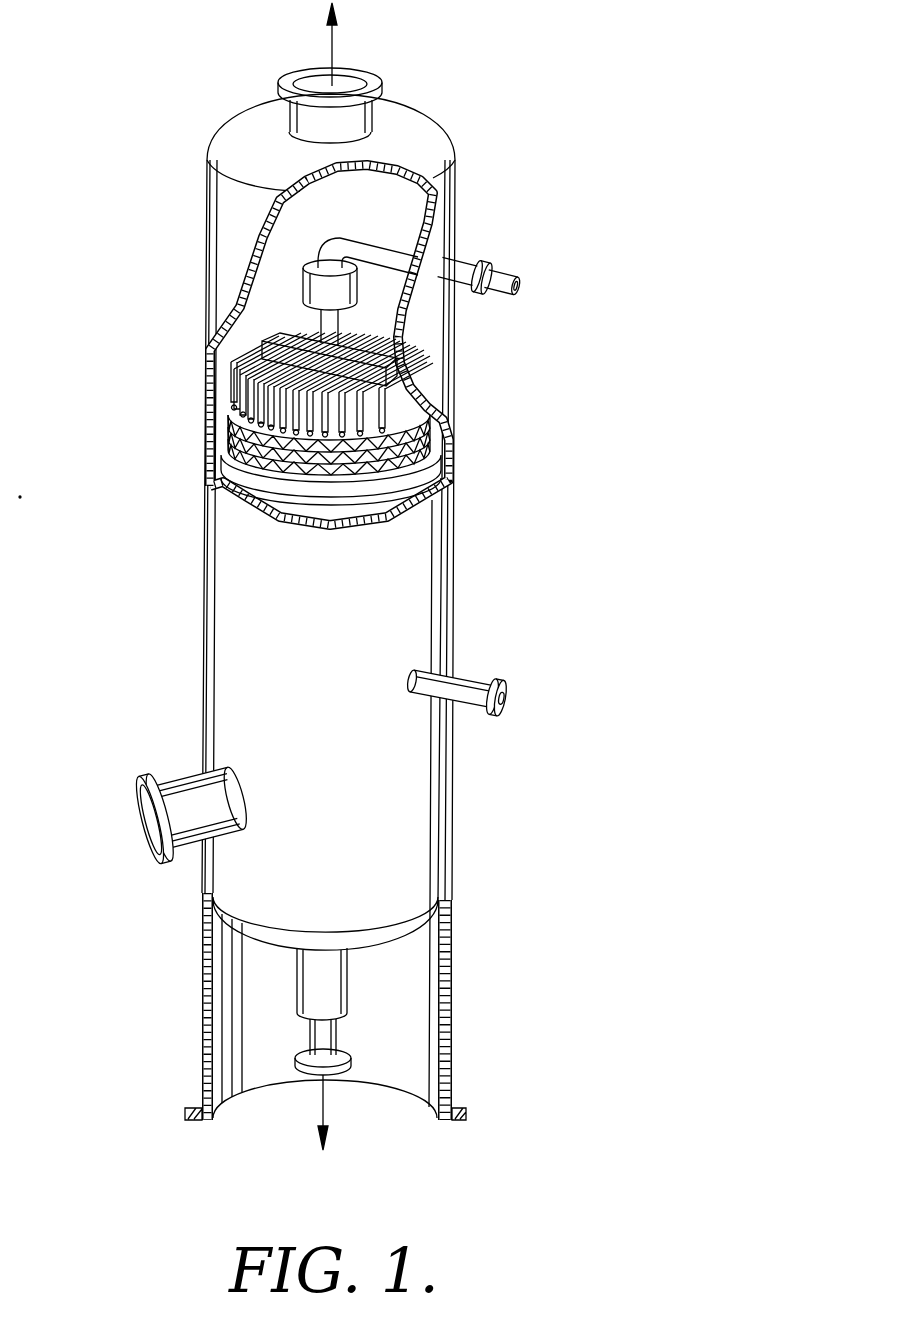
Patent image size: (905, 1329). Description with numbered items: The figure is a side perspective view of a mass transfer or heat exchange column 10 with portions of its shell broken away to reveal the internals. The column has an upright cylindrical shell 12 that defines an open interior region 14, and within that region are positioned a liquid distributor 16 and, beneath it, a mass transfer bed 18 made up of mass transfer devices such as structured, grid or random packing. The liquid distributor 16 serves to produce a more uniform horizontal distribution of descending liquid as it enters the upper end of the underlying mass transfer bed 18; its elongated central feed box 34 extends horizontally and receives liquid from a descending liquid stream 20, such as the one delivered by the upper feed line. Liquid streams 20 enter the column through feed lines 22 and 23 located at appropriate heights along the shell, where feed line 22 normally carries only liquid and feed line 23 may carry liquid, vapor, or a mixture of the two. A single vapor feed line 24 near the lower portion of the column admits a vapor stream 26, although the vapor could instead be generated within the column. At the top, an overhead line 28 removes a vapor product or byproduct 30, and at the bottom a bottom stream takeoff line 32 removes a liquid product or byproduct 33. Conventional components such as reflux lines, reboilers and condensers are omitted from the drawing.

The mass transfer column 10 is at (329, 578).
The shell 12 is at (455, 193).
The open interior region 14 is at (386, 192).
The liquid distributor 16 is at (256, 334).
The mass transfer bed 18 is at (196, 437).
The liquid stream 20 is at (548, 297).
The feed line 22 is at (463, 263).
The feed line 23 is at (468, 678).
The vapor feed line 24 is at (175, 772).
The vapor stream 26 is at (104, 841).
The overhead line 28 is at (287, 82).
The vapor product or byproduct 30 is at (333, 53).
The bottom stream takeoff line 32 is at (348, 982).
The liquid product or byproduct 33 is at (325, 1098).
The central feed box 34 is at (357, 357).